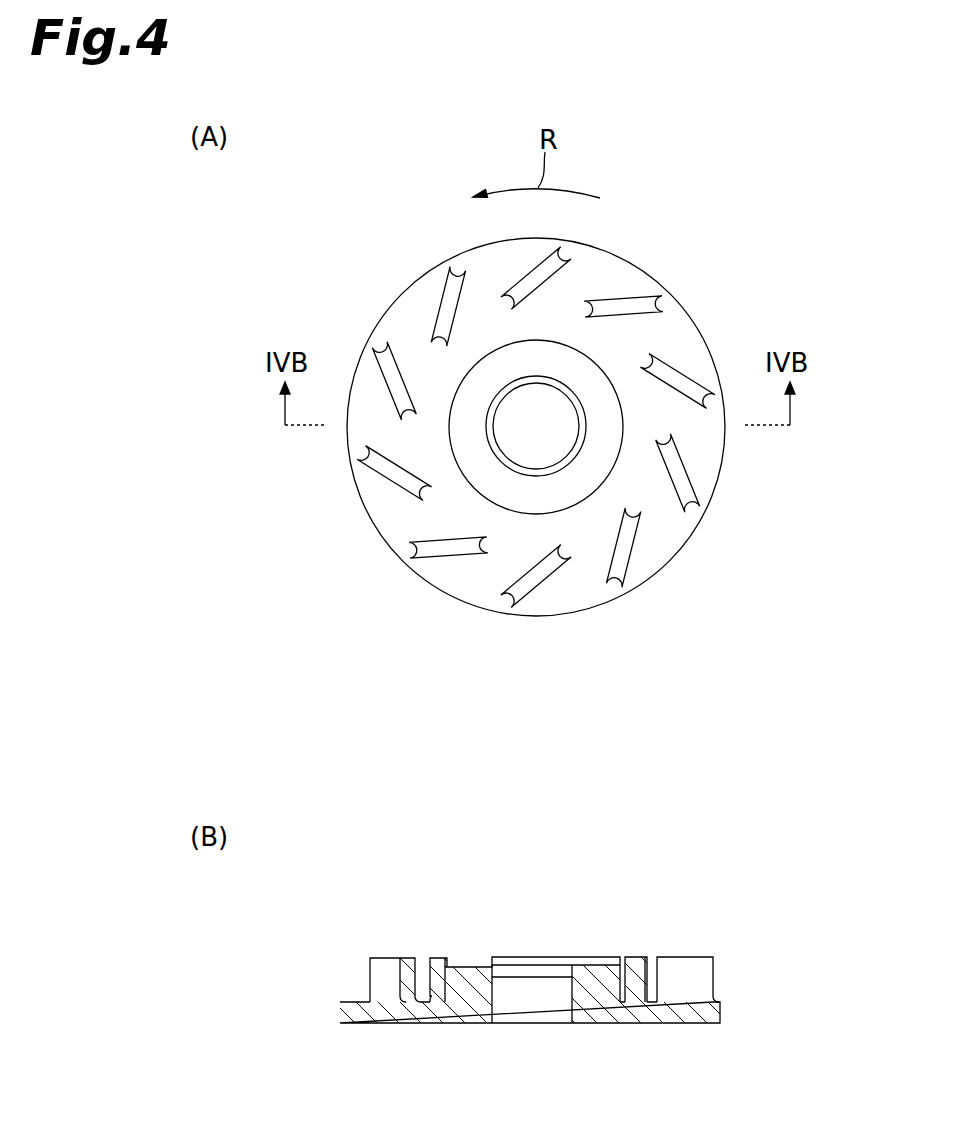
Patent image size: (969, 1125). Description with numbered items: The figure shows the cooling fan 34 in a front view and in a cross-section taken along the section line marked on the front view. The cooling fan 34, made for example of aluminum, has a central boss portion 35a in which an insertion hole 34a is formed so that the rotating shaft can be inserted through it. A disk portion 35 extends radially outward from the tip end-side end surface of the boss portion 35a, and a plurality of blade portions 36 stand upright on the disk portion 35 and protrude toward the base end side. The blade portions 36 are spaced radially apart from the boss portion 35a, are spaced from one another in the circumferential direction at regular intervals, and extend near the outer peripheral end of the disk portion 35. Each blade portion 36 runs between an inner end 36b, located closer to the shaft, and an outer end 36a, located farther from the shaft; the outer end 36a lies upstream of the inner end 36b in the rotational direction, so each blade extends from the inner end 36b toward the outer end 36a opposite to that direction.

The cooling fan 34 is at (623, 254).
The insertion hole 34a is at (493, 430).
The disk portion 35 is at (683, 552).
The boss portion 35a is at (523, 505).
The blade portion 36 is at (538, 580).
The outer end 36a is at (500, 605).
The inner end 36b is at (573, 541).